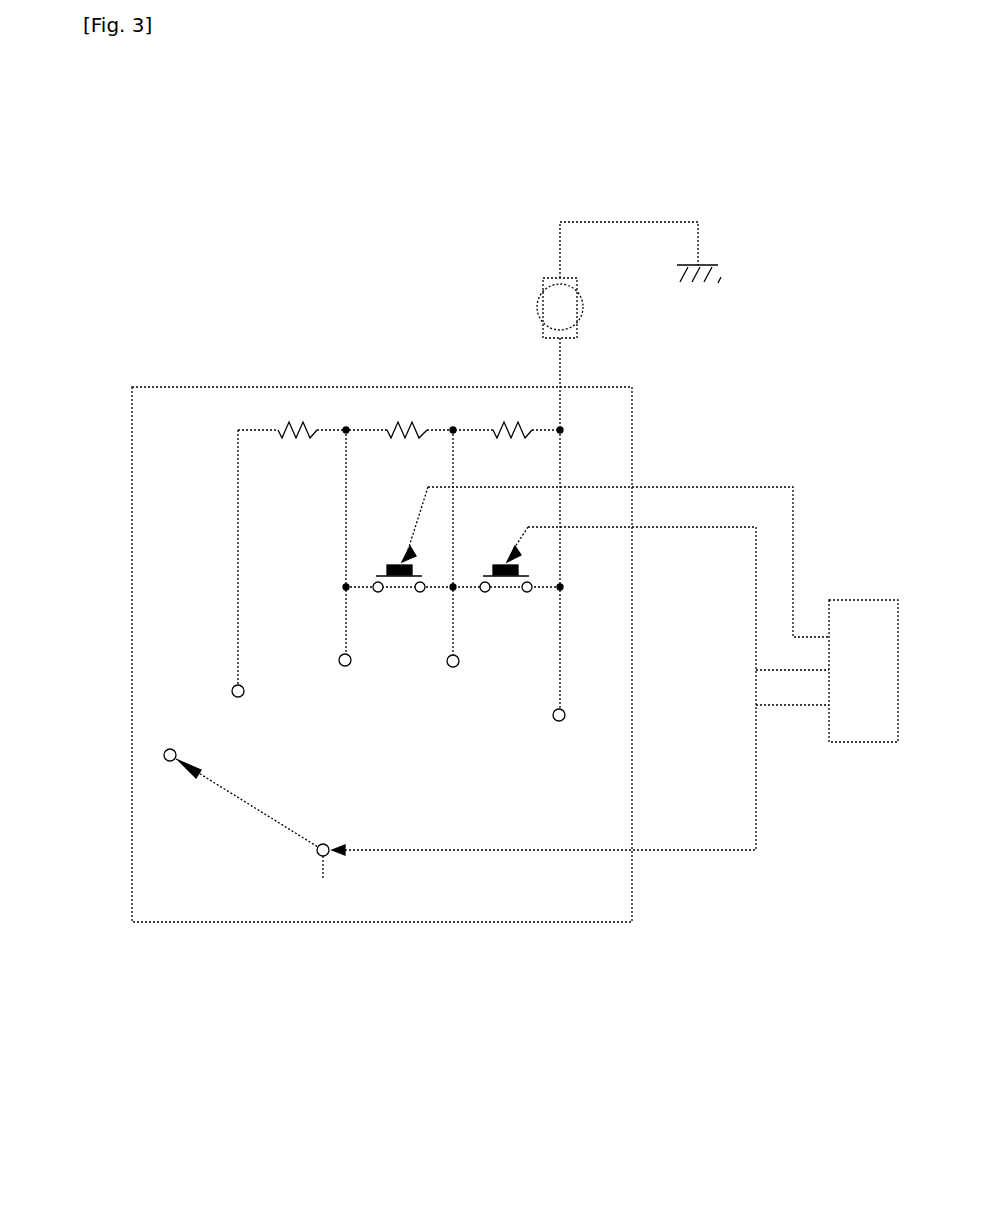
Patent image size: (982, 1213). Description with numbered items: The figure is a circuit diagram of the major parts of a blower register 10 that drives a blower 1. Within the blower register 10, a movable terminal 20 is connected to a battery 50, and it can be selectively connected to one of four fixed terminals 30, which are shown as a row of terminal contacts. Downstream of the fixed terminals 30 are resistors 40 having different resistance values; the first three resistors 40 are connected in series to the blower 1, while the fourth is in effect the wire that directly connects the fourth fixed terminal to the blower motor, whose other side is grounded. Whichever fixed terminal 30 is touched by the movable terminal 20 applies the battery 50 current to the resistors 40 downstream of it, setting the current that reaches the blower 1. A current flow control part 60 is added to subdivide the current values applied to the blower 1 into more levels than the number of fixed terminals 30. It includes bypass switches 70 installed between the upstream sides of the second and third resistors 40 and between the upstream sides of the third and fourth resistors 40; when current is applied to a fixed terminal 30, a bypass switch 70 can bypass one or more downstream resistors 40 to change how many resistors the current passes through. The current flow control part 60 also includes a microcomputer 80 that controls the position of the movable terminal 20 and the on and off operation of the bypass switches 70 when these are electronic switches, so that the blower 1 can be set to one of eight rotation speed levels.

The blower 1 is at (541, 284).
The switch module housing 10 is at (432, 922).
The movable terminal 20 is at (277, 820).
The fixed terminals 30 is at (342, 654).
The resistors 40 is at (292, 420).
The battery 50 is at (333, 908).
The current flow control part 60 is at (877, 453).
The bypass switches 70 is at (420, 565).
The microcomputer 80 is at (866, 600).